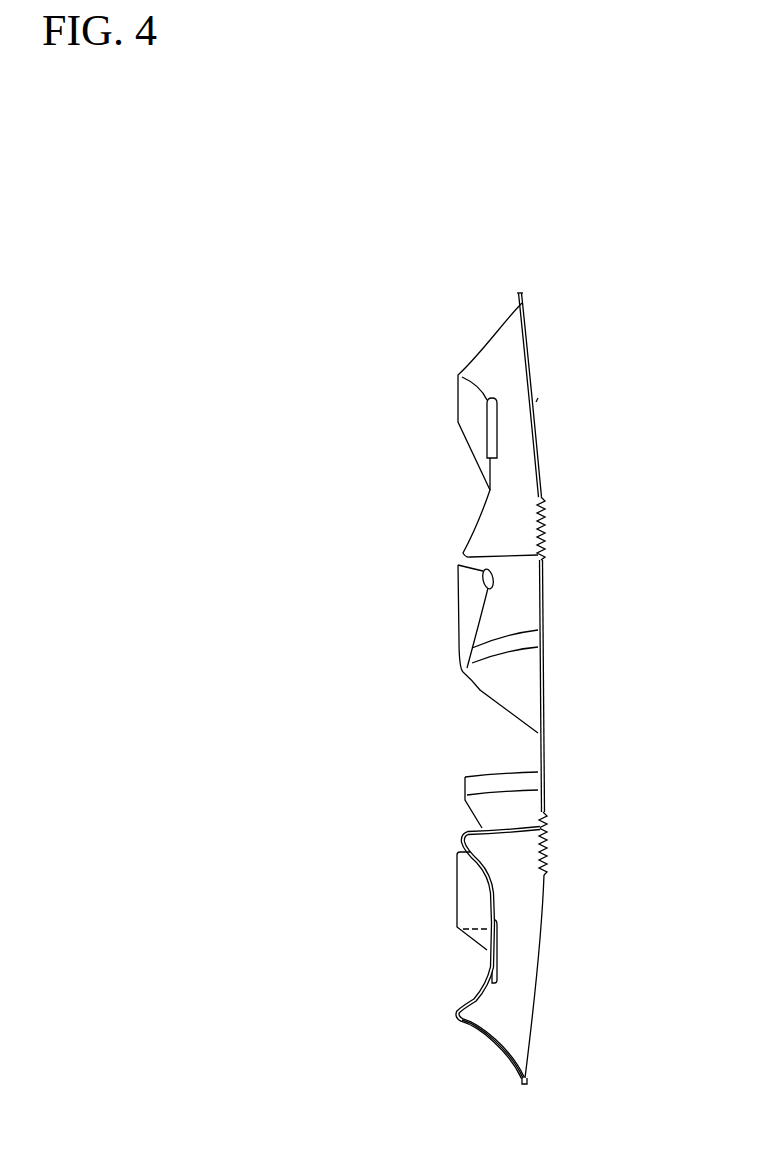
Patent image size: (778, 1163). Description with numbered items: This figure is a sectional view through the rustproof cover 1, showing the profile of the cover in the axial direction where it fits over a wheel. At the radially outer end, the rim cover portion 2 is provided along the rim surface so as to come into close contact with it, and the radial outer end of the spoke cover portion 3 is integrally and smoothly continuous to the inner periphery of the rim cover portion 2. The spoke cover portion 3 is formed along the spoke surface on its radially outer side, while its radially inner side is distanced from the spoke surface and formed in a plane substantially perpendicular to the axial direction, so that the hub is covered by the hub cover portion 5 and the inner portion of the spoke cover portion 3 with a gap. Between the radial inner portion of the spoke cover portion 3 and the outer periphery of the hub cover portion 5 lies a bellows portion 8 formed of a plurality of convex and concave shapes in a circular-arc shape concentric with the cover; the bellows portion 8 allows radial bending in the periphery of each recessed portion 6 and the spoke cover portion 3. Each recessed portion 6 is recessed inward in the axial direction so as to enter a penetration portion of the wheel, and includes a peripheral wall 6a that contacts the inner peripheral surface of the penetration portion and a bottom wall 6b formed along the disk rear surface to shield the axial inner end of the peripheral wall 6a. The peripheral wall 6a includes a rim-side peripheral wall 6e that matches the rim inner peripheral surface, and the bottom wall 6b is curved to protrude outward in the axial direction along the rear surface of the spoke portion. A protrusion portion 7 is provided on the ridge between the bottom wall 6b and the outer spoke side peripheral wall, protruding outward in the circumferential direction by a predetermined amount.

The rustproof cover 1 is at (636, 645).
The rim cover portion 2 is at (525, 293).
The spoke cover portion 3 is at (537, 400).
The hub cover portion 5 is at (547, 683).
The recessed portion 6 is at (472, 500).
The peripheral wall 6a is at (536, 933).
The bottom wall 6b is at (488, 892).
The rim-side peripheral wall 6e is at (513, 1052).
The protrusion portion 7 is at (492, 422).
The bellows portion 8 is at (547, 528).